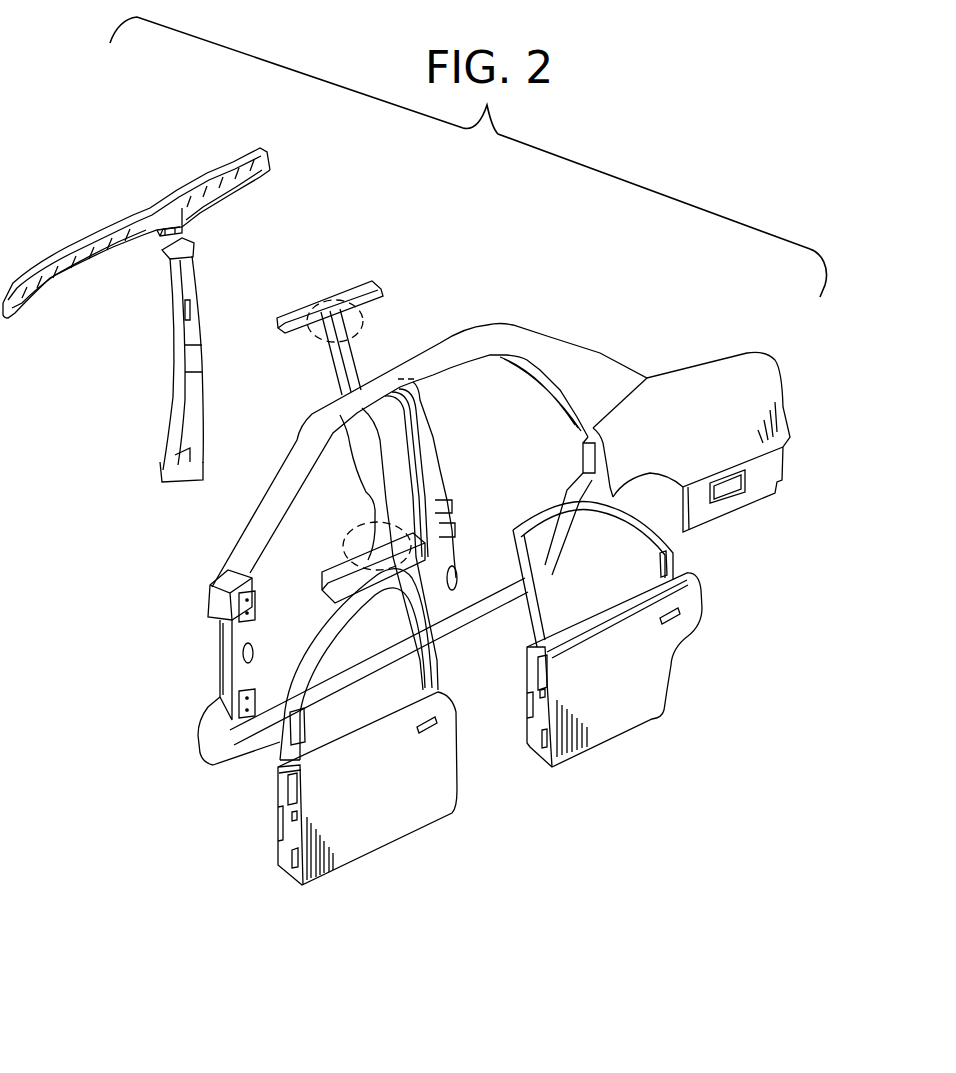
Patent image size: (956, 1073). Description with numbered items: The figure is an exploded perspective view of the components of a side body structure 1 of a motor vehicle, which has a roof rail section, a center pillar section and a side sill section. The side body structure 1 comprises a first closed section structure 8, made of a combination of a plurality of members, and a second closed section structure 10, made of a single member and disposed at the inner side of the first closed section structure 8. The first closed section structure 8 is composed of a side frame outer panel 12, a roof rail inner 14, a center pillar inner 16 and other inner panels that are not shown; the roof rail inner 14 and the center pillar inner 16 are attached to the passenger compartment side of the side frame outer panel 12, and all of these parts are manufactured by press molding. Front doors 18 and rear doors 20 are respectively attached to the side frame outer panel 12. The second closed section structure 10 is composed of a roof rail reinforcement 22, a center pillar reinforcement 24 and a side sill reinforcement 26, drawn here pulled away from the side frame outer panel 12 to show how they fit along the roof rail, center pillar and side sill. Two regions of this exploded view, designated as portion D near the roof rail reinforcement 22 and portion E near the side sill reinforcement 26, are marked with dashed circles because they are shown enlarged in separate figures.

The side body structure 1 is at (679, 749).
The first closed section structure 8 is at (523, 278).
The second closed section structure 10 is at (336, 381).
The side frame outer panel 12 is at (573, 367).
The roof rail inner 14 is at (112, 222).
The center pillar inner 16 is at (172, 358).
The front door 18 is at (383, 850).
The rear door 20 is at (612, 733).
The roof rail reinforcement 22 is at (293, 312).
The center pillar reinforcement 24 is at (323, 360).
The side sill reinforcement 26 is at (320, 578).
The portion D is at (367, 327).
The portion E is at (345, 538).